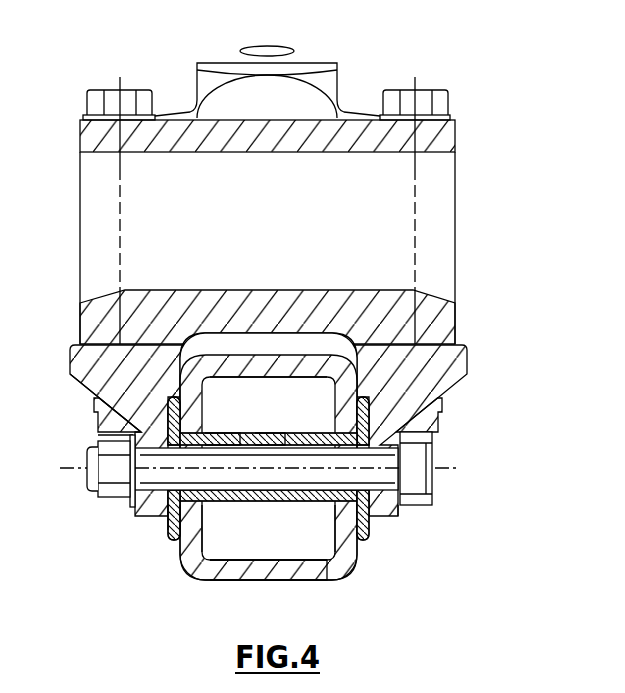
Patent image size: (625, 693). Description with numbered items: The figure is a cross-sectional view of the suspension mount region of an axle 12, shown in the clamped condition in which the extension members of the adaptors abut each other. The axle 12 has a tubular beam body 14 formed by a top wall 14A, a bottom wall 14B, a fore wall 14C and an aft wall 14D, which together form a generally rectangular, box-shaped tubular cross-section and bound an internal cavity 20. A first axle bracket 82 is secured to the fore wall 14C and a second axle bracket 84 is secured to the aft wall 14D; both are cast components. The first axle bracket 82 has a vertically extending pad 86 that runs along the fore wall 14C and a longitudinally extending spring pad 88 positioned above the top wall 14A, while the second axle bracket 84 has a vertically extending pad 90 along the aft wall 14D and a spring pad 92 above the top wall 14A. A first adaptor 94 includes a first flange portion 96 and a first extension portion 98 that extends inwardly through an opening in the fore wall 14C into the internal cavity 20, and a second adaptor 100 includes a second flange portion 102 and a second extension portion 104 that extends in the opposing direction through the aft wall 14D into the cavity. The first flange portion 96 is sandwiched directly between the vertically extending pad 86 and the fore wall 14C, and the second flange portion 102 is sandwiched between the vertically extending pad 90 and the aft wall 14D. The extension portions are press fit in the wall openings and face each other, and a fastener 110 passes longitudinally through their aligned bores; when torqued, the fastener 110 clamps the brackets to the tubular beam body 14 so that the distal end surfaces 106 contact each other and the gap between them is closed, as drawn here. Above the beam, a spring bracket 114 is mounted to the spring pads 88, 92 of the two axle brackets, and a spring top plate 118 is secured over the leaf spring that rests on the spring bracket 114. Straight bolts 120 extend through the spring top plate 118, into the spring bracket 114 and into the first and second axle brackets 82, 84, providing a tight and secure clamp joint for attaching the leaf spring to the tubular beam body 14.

The axle 12 is at (353, 573).
The tubular beam body 14 is at (192, 577).
The top wall 14A is at (240, 370).
The bottom wall 14B is at (283, 578).
The fore wall 14C is at (341, 530).
The aft wall 14D is at (204, 530).
The internal cavity 20 is at (232, 560).
The first axle bracket 82 is at (400, 515).
The second axle bracket 84 is at (133, 510).
The vertically extending pad 86 is at (388, 442).
The spring pad 88 is at (462, 360).
The vertically extending pad 90 is at (104, 427).
The spring pad 92 is at (72, 365).
The first adaptor 94 is at (362, 541).
The first flange portion 96 is at (365, 405).
The first extension portion 98 is at (303, 438).
The second adaptor 100 is at (169, 532).
The second flange portion 102 is at (188, 527).
The second extension portion 104 is at (212, 438).
The distal end surfaces 106 is at (270, 438).
The fastener 110 is at (427, 477).
The spring bracket 114 is at (285, 295).
The spring top plate 118 is at (448, 134).
The straight bolts 120 is at (96, 92).